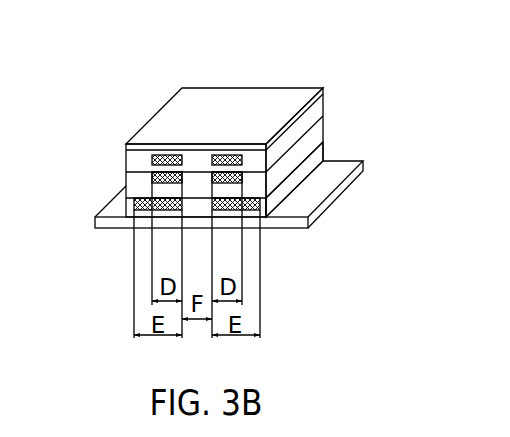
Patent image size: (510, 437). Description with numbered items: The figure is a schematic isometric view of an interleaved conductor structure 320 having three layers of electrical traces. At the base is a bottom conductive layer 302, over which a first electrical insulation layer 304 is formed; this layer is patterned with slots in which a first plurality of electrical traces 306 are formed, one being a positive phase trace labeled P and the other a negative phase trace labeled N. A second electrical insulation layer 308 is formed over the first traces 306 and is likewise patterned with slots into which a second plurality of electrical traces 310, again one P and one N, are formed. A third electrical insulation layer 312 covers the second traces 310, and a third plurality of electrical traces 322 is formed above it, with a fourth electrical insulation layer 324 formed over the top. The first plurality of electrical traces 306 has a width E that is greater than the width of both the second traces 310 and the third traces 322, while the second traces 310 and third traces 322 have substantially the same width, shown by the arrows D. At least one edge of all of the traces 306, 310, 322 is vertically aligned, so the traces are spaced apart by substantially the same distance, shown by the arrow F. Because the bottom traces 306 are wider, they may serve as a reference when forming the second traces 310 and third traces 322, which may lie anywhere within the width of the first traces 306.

The bottom conductive layer 302 is at (95, 220).
The first electrical insulation layer 304 is at (307, 170).
The first plurality of electrical traces 306 is at (145, 216).
The second electrical insulation layer 308 is at (268, 193).
The second plurality of electrical traces 310 is at (337, 101).
The third electrical insulation layer 312 is at (153, 178).
The interleaved conductor structure 320 is at (103, 160).
The third plurality of electrical traces 322 is at (328, 55).
The fourth electrical insulation layer 324 is at (222, 107).